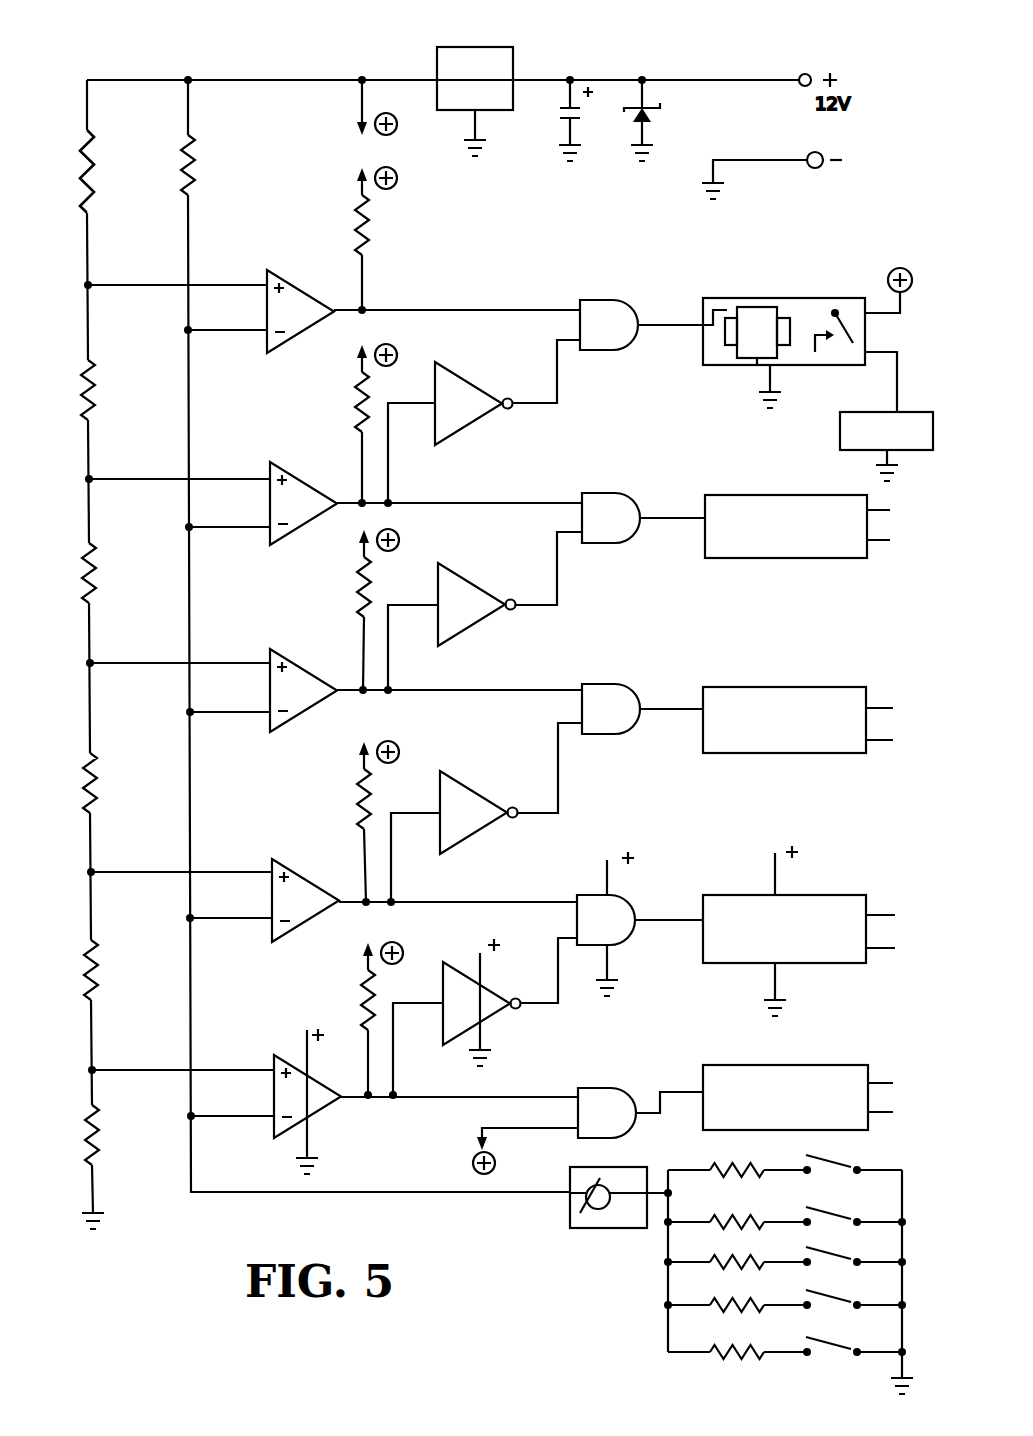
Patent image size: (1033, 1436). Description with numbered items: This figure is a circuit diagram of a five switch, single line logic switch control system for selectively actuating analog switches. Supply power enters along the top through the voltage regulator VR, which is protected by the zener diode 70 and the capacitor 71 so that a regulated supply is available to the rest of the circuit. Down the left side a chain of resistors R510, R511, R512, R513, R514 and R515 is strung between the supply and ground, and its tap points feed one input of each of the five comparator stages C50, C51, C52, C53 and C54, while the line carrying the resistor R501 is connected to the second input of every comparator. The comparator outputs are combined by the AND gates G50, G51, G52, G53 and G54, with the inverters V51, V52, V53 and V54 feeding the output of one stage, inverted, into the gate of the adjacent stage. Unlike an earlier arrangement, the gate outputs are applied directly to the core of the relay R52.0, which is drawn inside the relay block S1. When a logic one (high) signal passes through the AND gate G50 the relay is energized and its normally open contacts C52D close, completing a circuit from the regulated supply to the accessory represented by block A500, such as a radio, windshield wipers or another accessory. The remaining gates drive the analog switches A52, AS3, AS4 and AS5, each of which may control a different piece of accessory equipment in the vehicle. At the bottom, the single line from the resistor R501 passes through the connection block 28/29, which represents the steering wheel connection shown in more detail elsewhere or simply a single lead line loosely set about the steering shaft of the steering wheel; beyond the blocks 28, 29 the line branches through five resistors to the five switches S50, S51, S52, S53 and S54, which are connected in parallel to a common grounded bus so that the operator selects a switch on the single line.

The voltage divider resistor R510 is at (53, 171).
The reference resistor R501 is at (197, 172).
The voltage divider resistor R511 is at (54, 390).
The voltage divider resistor R512 is at (55, 573).
The voltage divider resistor R513 is at (55, 783).
The voltage divider resistor R514 is at (56, 970).
The voltage divider resistor R515 is at (58, 1135).
The comparator C50 is at (300, 311).
The comparator C51 is at (303, 503).
The comparator C52 is at (303, 690).
The comparator C53 is at (305, 900).
The comparator C54 is at (307, 1096).
The inverter V51 is at (474, 403).
The inverter V52 is at (477, 604).
The inverter V53 is at (479, 812).
The inverter V54 is at (482, 1003).
The AND gate G50 is at (609, 325).
The AND gate G51 is at (611, 518).
The AND gate G52 is at (611, 709).
The AND gate G53 is at (606, 920).
The AND gate G54 is at (607, 1113).
The voltage regulator VR is at (475, 101).
The capacitor 71 is at (545, 108).
The zener diode 70 is at (655, 113).
The relay S1 is at (777, 330).
The relay R52.0 is at (745, 368).
The normally open contacts C52D is at (840, 358).
The accessory A500 is at (886, 446).
The analog switch A52 is at (797, 526).
The analog switch AS3 is at (798, 720).
The analog switch AS4 is at (799, 931).
The analog switch AS5 is at (798, 1097).
The connection block 28 is at (593, 1216).
The connection block 29 is at (600, 1230).
The selector switch S50 is at (843, 1152).
The selector switch S51 is at (853, 1196).
The selector switch S52 is at (853, 1240).
The selector switch S53 is at (840, 1280).
The selector switch S54 is at (828, 1337).